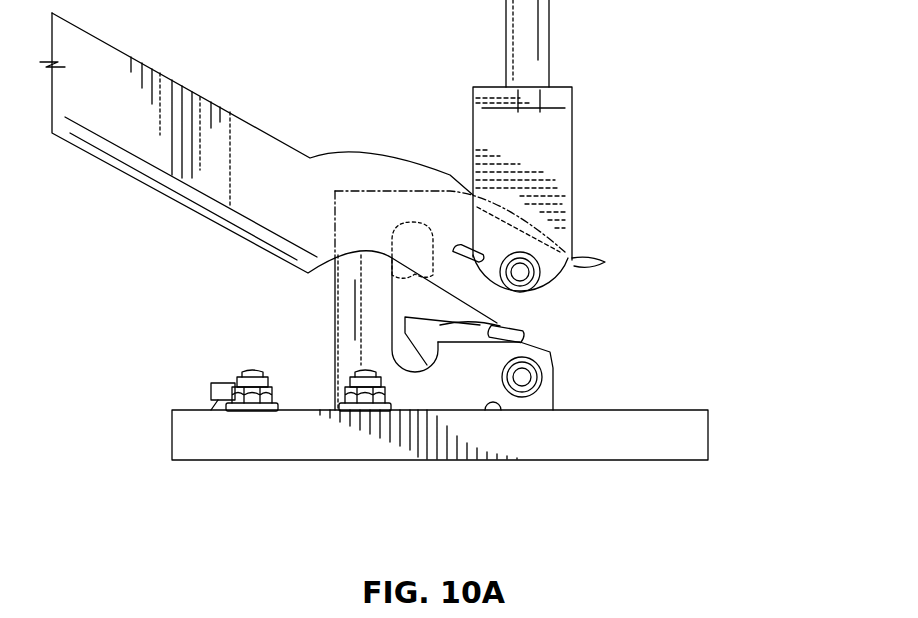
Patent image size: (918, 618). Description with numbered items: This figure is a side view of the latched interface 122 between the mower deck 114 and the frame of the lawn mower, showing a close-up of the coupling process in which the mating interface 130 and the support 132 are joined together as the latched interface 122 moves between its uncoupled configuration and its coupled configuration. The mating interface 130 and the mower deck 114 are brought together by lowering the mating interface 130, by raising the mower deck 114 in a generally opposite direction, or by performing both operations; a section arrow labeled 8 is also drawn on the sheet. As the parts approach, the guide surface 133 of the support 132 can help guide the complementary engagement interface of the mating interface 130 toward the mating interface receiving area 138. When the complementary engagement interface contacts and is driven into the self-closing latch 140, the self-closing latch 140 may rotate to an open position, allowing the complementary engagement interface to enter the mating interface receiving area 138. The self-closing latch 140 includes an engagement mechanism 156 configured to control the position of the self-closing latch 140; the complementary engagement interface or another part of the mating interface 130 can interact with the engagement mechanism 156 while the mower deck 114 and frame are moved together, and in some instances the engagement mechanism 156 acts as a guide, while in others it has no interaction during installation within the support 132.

The section line 8 is at (289, 445).
The mower deck 114 is at (697, 443).
The latched interface 122 is at (664, 206).
The mating interface 130 is at (557, 118).
The support 132 is at (461, 392).
The guide surface 133 is at (505, 205).
The mating interface receiving area 138 is at (385, 290).
The self-closing latch 140 is at (455, 328).
The engagement mechanism 156 is at (605, 263).